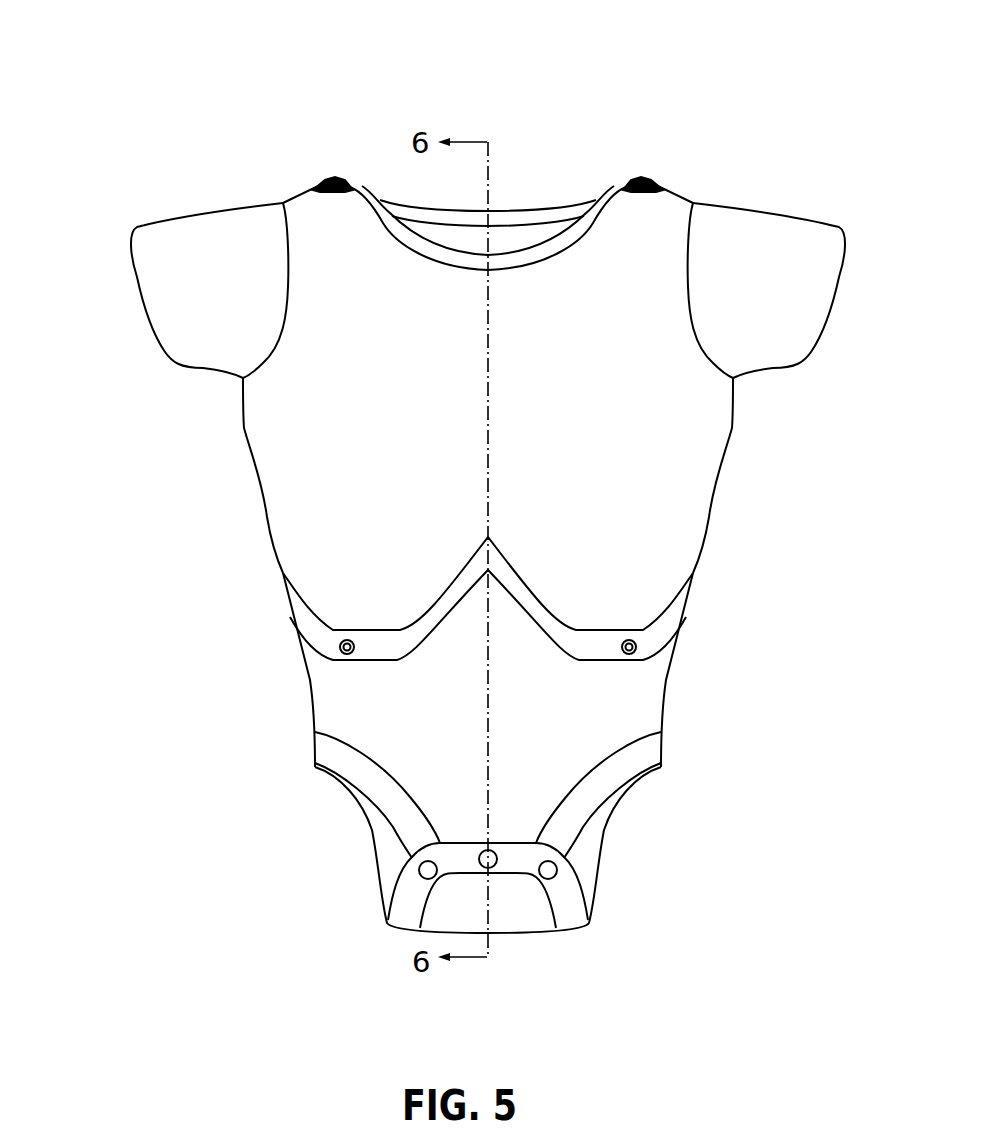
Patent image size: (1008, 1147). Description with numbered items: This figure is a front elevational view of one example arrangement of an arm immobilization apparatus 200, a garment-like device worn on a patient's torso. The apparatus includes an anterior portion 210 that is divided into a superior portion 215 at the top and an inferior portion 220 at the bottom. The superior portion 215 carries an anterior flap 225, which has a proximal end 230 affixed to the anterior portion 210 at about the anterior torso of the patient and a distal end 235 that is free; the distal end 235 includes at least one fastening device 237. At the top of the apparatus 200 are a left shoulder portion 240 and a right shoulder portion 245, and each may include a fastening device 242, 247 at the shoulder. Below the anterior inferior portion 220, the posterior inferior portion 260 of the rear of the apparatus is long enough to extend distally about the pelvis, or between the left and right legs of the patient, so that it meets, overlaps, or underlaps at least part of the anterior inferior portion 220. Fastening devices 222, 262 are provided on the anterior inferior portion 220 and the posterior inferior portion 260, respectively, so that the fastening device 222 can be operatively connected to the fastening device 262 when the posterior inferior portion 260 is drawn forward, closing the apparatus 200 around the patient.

The arm immobilization apparatus 200 is at (195, 111).
The anterior portion 210 is at (220, 503).
The superior portion 215 is at (357, 350).
The inferior portion 220 is at (432, 778).
The fastening device 222 is at (553, 863).
The anterior flap 225 is at (443, 590).
The proximal end 230 is at (542, 533).
The distal end 235 is at (423, 617).
The fastening device 237 is at (640, 645).
The left shoulder portion 240 is at (680, 197).
The fastening device 242 is at (638, 177).
The right shoulder portion 245 is at (287, 200).
The fastening device 247 is at (333, 178).
The posterior inferior portion 260 is at (517, 910).
The fastening device 262 is at (553, 863).